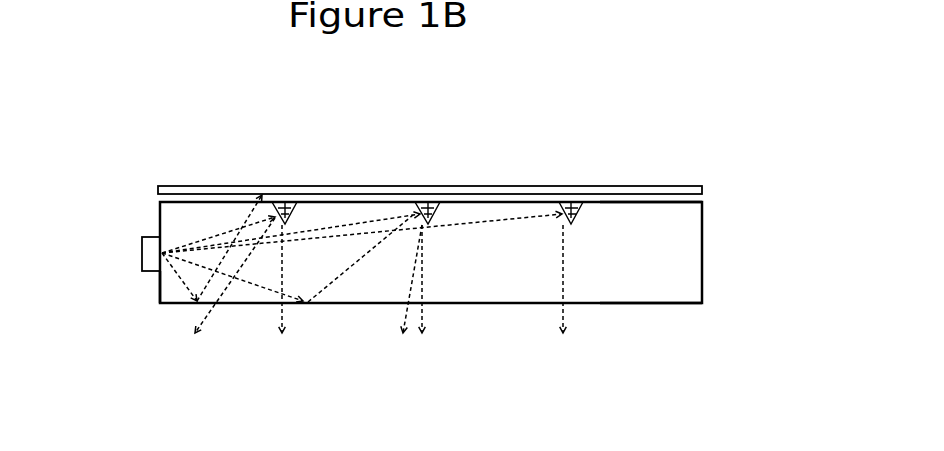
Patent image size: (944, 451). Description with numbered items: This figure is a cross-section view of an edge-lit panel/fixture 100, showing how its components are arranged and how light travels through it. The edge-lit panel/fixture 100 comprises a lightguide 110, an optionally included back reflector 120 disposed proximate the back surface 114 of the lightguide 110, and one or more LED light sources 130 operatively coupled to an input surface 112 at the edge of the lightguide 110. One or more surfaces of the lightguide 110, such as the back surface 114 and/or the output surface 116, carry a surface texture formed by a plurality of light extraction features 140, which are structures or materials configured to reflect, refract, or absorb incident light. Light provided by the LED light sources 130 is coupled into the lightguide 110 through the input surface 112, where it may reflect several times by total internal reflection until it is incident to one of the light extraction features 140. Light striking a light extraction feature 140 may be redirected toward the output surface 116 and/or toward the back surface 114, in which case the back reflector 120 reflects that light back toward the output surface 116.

The edge-lit panel/fixture 100 is at (124, 135).
The lightguide 110 is at (178, 215).
The input surface 112 is at (152, 289).
The back surface 114 is at (658, 210).
The output surface 116 is at (658, 298).
The back reflector 120 is at (666, 190).
The LED light source 130 is at (150, 261).
The light extraction feature 140 is at (565, 208).